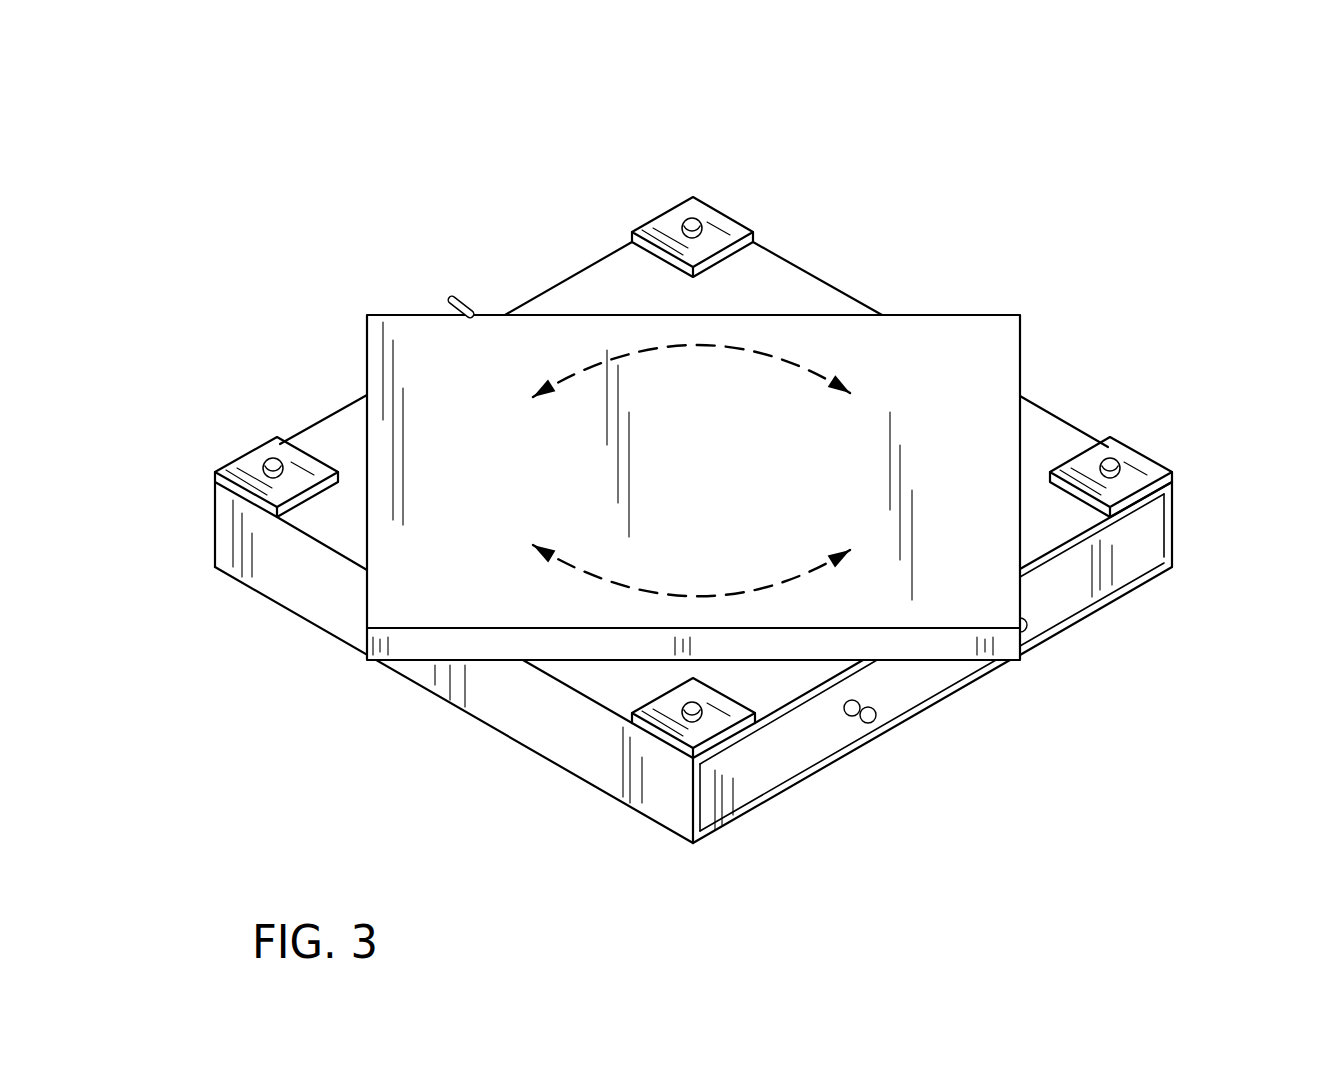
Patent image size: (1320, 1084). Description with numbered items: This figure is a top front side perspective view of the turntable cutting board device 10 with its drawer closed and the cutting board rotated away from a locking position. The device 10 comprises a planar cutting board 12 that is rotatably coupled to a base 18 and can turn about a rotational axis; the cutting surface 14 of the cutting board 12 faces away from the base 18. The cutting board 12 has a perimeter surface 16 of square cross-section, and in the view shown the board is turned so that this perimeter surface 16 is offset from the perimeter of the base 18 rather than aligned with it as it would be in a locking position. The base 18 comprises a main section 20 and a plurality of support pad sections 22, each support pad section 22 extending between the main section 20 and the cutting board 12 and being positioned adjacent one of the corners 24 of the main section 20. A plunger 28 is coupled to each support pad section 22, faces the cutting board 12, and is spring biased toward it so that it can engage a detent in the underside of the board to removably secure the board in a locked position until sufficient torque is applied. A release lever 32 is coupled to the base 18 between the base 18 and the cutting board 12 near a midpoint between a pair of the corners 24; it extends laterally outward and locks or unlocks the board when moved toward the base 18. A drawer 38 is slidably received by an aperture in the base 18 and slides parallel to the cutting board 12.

The turntable cutting board device 10 is at (883, 143).
The cutting board 12 is at (965, 333).
The cutting surface 14 is at (402, 330).
The perimeter surface 16 is at (413, 640).
The base 18 is at (550, 722).
The main section 20 is at (302, 580).
The support pad section 22 is at (692, 208).
The corner 24 is at (215, 523).
The plunger 28 is at (700, 225).
The release lever 32 is at (448, 293).
The drawer 38 is at (1113, 562).